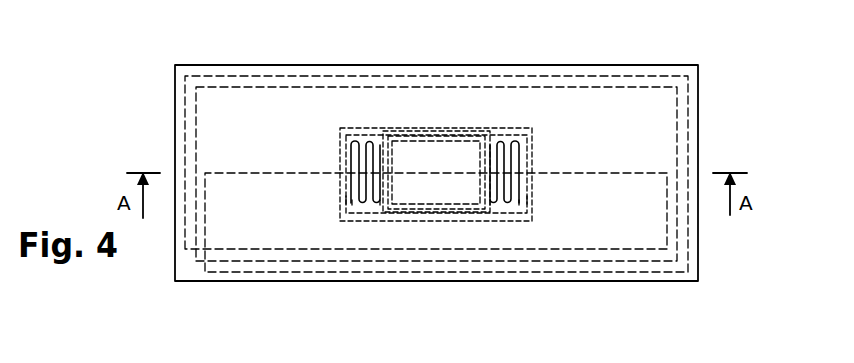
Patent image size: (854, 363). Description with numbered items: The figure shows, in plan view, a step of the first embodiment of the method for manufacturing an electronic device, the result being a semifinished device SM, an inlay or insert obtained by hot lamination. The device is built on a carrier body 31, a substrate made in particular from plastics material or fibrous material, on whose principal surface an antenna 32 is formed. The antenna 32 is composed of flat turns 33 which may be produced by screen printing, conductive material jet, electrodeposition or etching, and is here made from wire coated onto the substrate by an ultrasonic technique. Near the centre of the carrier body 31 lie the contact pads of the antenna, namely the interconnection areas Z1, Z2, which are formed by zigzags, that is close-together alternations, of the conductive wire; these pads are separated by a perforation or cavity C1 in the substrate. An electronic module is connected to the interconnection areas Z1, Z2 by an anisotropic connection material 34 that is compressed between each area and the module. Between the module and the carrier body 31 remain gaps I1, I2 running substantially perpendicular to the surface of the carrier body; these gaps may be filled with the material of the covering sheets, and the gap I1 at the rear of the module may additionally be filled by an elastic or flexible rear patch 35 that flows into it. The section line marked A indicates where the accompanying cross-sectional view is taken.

The semifinished device SM is at (118, 93).
The carrier body 31 is at (702, 92).
The antenna 32 is at (690, 139).
The turns 33 is at (595, 250).
The anisotropic connection material 34 is at (363, 217).
The rear patch 35 is at (498, 218).
The cavity C1 is at (460, 218).
The first interconnection area Z1 is at (508, 150).
The second interconnection area Z2 is at (366, 150).
The gap I1 is at (482, 200).
The gap I2 is at (342, 200).